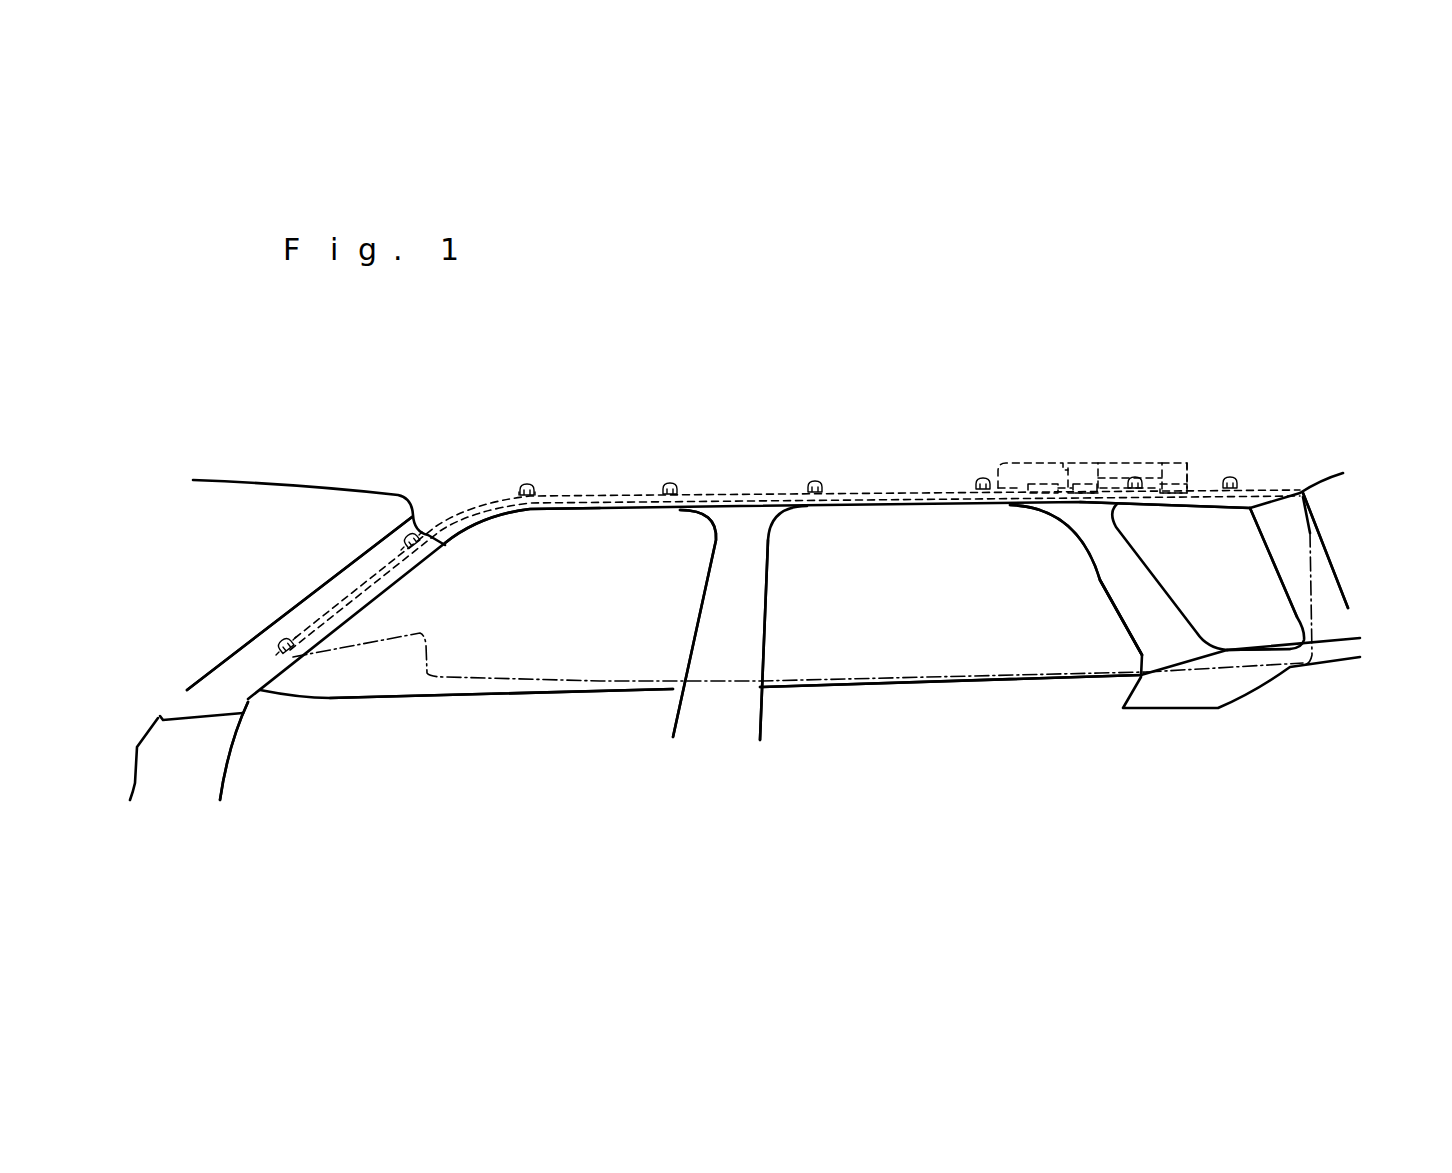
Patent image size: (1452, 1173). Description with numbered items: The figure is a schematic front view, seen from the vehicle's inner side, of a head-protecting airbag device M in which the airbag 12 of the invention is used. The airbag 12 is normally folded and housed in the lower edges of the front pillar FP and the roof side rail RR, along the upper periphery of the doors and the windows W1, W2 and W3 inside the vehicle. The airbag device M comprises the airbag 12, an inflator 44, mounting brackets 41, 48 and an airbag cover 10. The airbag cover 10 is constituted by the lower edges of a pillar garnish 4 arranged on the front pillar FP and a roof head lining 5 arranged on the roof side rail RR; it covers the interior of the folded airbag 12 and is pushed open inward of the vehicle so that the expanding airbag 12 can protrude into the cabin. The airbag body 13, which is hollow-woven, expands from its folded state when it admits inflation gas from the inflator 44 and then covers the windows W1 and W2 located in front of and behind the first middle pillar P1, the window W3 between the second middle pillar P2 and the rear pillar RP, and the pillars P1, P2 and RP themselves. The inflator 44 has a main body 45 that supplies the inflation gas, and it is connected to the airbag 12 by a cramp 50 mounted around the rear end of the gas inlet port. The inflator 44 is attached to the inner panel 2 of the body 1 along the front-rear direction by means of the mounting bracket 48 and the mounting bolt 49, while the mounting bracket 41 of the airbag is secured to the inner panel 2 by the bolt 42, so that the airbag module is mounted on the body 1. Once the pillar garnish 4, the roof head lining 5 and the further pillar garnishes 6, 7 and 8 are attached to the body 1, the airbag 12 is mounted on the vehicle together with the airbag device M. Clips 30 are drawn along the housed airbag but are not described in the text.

The body 1 is at (745, 583).
The inner panel 2 is at (740, 493).
The pillar garnish 4 is at (243, 690).
The roof head lining 5 is at (615, 488).
The pillar garnish 6 is at (700, 652).
The pillar garnish 7 is at (1100, 575).
The pillar garnish 8 is at (1282, 557).
The airbag cover 10 is at (417, 567).
The airbag 12 is at (720, 588).
The airbag body 13 is at (897, 493).
The mounting bracket (clip) 30 is at (278, 643).
The mounting bracket 41 is at (401, 538).
The bolt 42 is at (419, 533).
The inflator 44 is at (1142, 458).
The main body 45 is at (1110, 462).
The mounting bracket 48 is at (1085, 462).
The mounting bolt 49 is at (1170, 497).
The cramp 50 is at (1063, 460).
The head-protecting airbag device M is at (1277, 471).
The roof side rail RR is at (1200, 477).
The rear pillar RP is at (1330, 617).
The front pillar FP is at (188, 688).
The first middle pillar P1 is at (768, 637).
The second middle pillar P2 is at (1109, 614).
The window W1 is at (420, 690).
The window W2 is at (847, 690).
The window W3 is at (1293, 623).